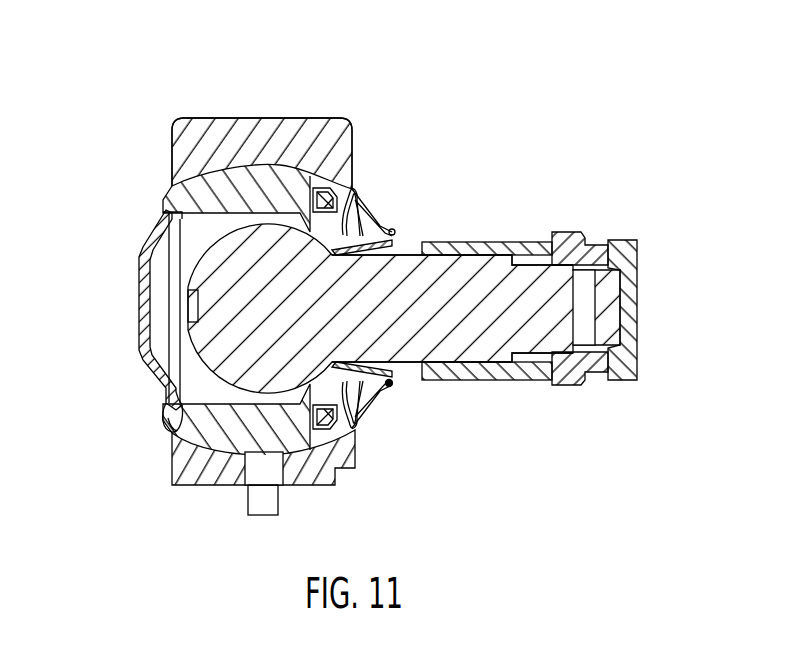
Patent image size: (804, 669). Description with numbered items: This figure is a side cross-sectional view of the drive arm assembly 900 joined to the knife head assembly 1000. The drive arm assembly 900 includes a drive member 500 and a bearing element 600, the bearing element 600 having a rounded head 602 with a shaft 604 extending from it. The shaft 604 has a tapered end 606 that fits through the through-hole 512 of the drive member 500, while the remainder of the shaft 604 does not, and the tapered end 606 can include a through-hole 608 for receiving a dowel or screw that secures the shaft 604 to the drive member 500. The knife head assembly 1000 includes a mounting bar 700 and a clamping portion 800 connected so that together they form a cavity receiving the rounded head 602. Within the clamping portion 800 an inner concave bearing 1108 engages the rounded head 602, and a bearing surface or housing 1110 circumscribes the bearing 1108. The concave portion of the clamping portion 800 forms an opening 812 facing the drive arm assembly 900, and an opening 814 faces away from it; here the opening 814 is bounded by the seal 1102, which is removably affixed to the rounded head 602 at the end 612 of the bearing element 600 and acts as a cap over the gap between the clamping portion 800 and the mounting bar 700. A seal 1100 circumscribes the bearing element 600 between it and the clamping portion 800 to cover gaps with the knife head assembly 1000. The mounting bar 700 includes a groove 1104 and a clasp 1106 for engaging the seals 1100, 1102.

The knife head assembly 1000 is at (175, 96).
The clamping portion 800 is at (270, 165).
The bearing surface or housing 1110 is at (246, 222).
The inner concave bearing 1108 is at (236, 216).
The opening 814 is at (162, 275).
The seal 1102 is at (173, 393).
The groove 1104 is at (173, 423).
The mounting bar 700 is at (160, 493).
The clasp 1106 is at (340, 425).
The drive arm assembly 900 is at (596, 129).
The bearing element 600 is at (441, 280).
The end 612 is at (178, 351).
The through-hole 608 is at (587, 270).
The tapered end 606 is at (622, 335).
The drive member 500 is at (525, 242).
The shaft 604 is at (470, 255).
The through-hole 512 is at (530, 374).
The opening 812 is at (331, 222).
The rounded head 602 is at (348, 228).
The seal 1100 is at (390, 386).